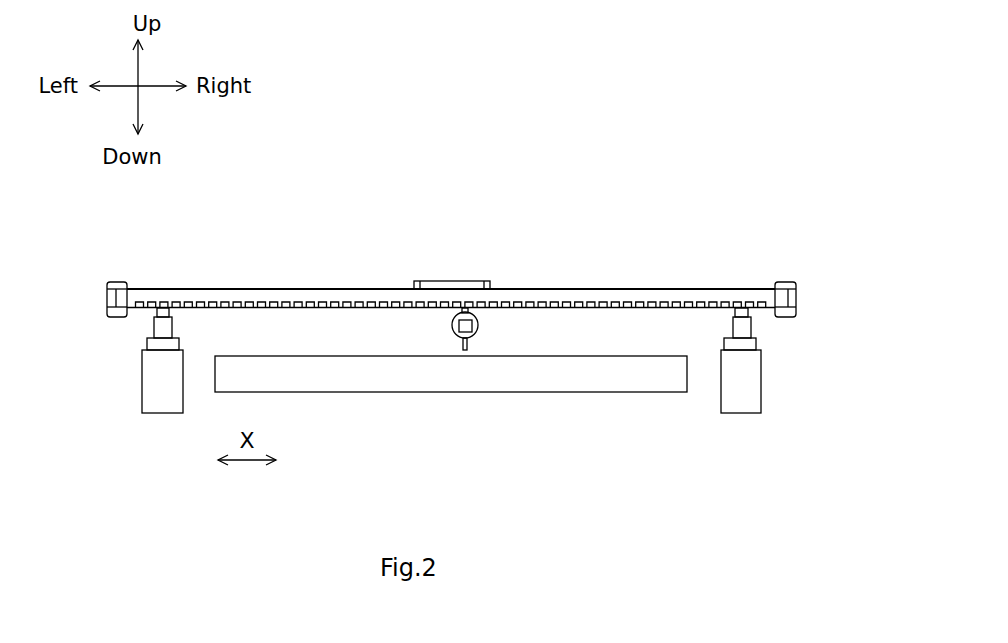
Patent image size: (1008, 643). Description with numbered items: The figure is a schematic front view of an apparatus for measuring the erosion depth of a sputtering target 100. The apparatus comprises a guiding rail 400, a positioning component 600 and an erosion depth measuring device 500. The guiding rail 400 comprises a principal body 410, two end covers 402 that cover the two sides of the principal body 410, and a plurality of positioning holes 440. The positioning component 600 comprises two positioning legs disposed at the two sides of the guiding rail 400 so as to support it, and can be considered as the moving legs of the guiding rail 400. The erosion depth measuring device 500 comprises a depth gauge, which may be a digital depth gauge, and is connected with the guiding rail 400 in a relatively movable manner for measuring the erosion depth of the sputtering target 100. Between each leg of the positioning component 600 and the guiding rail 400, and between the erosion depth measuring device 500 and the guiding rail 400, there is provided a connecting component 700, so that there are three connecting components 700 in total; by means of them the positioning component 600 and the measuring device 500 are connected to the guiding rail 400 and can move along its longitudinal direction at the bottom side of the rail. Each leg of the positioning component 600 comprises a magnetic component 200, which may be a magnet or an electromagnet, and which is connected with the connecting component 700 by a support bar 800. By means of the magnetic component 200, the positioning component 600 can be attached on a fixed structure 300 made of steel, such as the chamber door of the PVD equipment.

The sputtering target 100 is at (450, 393).
The magnetic component 200 is at (173, 344).
The fixed structure 300 is at (142, 413).
The guiding rail 400 is at (351, 279).
The end cover 402 is at (457, 268).
The principal body 410 is at (512, 257).
The positioning holes 440 is at (451, 270).
The erosion depth measuring device 500 is at (451, 322).
The positioning component 600 is at (147, 331).
The connecting component 700 is at (452, 268).
The support bar 800 is at (738, 328).